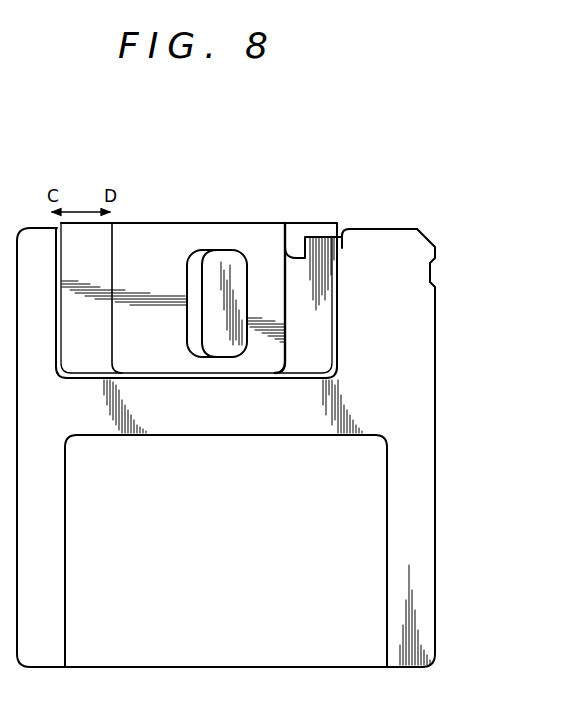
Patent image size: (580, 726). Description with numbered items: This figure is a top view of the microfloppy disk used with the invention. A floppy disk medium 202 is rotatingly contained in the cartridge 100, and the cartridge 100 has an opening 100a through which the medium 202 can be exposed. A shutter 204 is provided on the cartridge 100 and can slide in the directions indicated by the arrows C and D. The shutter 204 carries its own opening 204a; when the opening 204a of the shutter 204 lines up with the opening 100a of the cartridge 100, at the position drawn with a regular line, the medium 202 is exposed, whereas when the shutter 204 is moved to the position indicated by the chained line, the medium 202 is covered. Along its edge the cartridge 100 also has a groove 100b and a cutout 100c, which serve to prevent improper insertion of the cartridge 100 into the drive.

The cartridge 100 is at (426, 401).
The opening 100a is at (226, 355).
The groove 100b is at (384, 228).
The cutout 100c is at (303, 238).
The floppy disk medium 202 is at (213, 327).
The shutter 204 is at (256, 238).
The opening of the shutter 204a is at (242, 305).